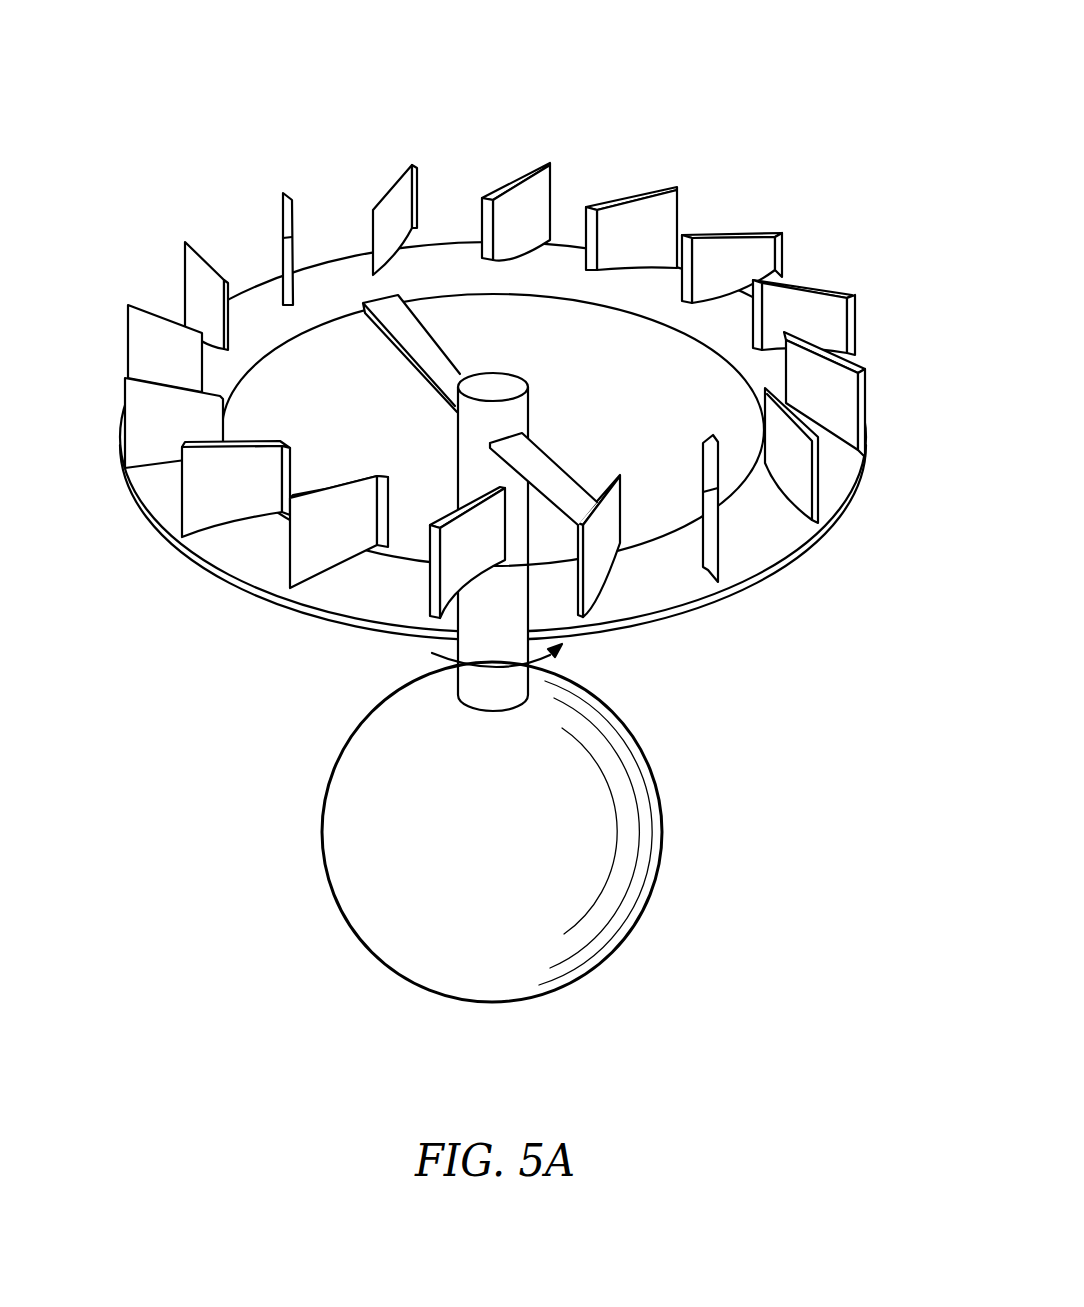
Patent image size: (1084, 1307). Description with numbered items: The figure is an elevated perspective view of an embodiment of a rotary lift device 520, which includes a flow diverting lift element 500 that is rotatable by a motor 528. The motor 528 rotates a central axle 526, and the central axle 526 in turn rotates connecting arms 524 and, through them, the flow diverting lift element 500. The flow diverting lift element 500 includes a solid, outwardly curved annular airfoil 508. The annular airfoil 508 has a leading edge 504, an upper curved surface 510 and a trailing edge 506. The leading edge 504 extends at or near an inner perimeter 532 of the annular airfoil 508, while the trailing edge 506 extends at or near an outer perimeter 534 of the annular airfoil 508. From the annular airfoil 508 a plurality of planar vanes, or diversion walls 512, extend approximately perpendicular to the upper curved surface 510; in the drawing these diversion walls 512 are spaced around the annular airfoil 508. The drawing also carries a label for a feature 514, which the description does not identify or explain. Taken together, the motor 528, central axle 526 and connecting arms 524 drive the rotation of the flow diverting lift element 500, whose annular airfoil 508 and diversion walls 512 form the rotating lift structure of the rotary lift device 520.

The flow diverting lift element 500 is at (733, 667).
The leading edge 504 is at (502, 453).
The trailing edge 506 is at (828, 530).
The annular airfoil 508 is at (643, 607).
The upper curved surface 510 is at (395, 598).
The diversion walls 512 is at (216, 257).
The front rib 514 is at (495, 567).
The rotary lift device 520 is at (601, 55).
The connecting arms 524 is at (433, 350).
The central axle 526 is at (522, 410).
The motor 528 is at (653, 810).
The inner perimeter 532 is at (295, 330).
The outer perimeter 534 is at (368, 625).